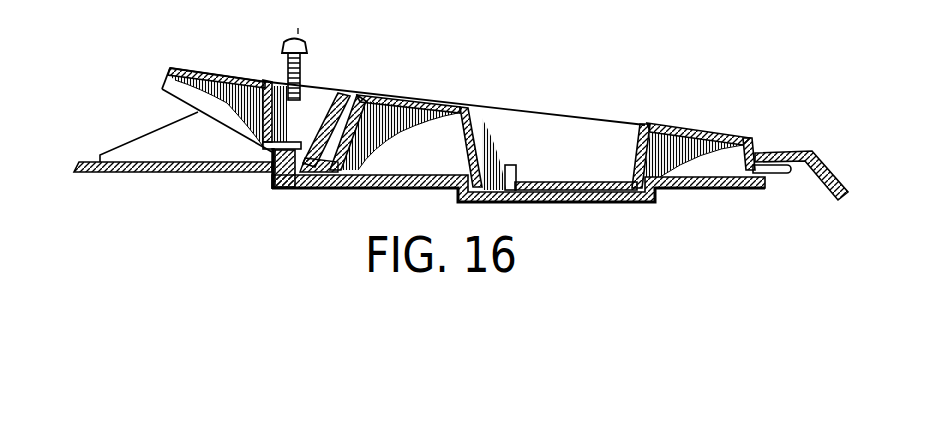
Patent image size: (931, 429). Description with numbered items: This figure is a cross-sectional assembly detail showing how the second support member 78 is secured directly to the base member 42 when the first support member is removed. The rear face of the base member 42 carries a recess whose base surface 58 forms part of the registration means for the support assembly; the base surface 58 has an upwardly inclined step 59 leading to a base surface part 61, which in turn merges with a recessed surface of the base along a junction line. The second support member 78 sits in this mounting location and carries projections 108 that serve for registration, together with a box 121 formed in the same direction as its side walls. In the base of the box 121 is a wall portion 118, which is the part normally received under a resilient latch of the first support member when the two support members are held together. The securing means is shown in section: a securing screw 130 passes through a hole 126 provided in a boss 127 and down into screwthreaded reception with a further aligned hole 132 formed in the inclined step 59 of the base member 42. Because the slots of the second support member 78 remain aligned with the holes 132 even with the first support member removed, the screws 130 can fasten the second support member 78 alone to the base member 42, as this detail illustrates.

The base member 42 is at (843, 176).
The base surface 58 is at (360, 167).
The upwardly inclined step 59 is at (268, 174).
The base surface part 61 is at (163, 153).
The second support member 78 is at (436, 99).
The projections 108 is at (778, 176).
The wall portion 118 is at (512, 162).
The box 121 is at (620, 161).
The holes 126 is at (296, 162).
The bosses 127 is at (281, 80).
The securing screws 130 is at (302, 64).
The holes 132 is at (290, 189).